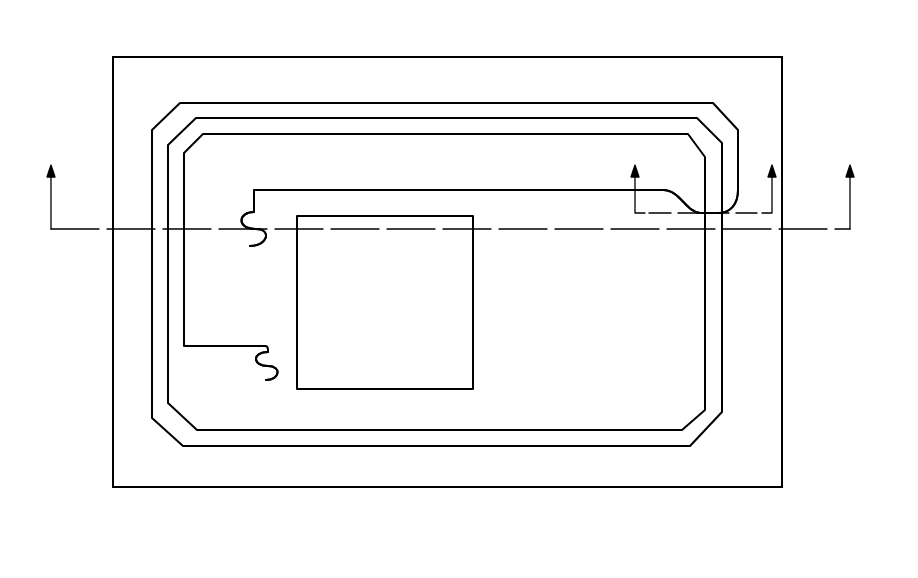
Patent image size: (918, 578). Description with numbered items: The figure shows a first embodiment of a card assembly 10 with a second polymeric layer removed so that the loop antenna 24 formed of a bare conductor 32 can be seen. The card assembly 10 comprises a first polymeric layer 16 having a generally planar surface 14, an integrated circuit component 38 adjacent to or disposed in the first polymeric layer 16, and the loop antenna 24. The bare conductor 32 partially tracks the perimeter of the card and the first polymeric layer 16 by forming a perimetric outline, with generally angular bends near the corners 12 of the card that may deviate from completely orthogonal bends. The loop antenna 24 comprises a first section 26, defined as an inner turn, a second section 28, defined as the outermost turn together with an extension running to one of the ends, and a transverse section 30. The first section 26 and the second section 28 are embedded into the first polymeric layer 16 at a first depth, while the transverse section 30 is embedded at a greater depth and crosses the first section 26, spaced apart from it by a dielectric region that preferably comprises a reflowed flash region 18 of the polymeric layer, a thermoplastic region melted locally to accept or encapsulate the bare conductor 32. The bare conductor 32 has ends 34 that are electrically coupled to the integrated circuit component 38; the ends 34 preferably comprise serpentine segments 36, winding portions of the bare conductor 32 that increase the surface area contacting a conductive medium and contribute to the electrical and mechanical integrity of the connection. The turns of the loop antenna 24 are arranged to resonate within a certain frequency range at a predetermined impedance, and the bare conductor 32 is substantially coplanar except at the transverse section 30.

The card assembly 10 is at (433, 25).
The corners 12 is at (113, 57).
The planar surface 14 is at (772, 414).
The first polymeric layer 16 is at (772, 326).
The reflowed flash region 18 is at (695, 193).
The loop antenna 24 is at (273, 98).
The first section 26 is at (443, 135).
The second section 28 is at (729, 114).
The transverse section 30 is at (664, 190).
The bare conductor 32 is at (438, 446).
The ends 34 is at (243, 242).
The serpentine segments 36 is at (260, 240).
The integrated circuit component 38 is at (468, 307).